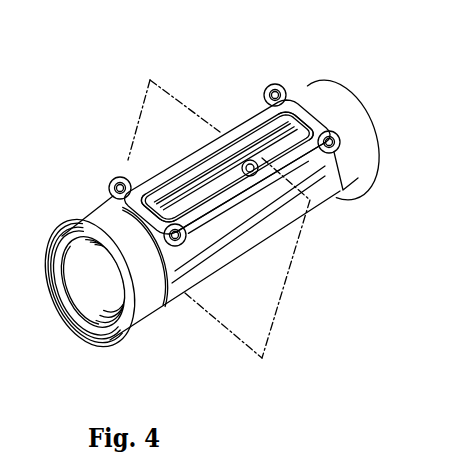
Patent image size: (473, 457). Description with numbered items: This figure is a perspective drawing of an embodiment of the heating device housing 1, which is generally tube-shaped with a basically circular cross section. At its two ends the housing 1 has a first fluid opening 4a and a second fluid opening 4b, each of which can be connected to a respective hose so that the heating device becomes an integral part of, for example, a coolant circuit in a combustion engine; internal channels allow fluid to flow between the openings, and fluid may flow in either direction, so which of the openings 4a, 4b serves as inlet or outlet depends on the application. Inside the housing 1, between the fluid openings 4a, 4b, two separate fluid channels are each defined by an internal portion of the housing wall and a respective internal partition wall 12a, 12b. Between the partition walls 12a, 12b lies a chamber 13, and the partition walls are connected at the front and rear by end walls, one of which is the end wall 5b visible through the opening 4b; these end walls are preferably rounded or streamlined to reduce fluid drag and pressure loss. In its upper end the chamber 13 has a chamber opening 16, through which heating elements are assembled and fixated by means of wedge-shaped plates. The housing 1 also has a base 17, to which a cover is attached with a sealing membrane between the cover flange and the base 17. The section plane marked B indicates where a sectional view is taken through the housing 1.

The housing 1 is at (289, 240).
The first fluid opening 4a is at (375, 114).
The second fluid opening 4b is at (107, 332).
The end wall 5b is at (103, 295).
The internal partition wall 12a is at (176, 164).
The internal partition wall 12b is at (282, 136).
The chamber 13 is at (180, 187).
The chamber opening 16 is at (216, 161).
The base 17 is at (307, 184).
The section plane B is at (141, 85).